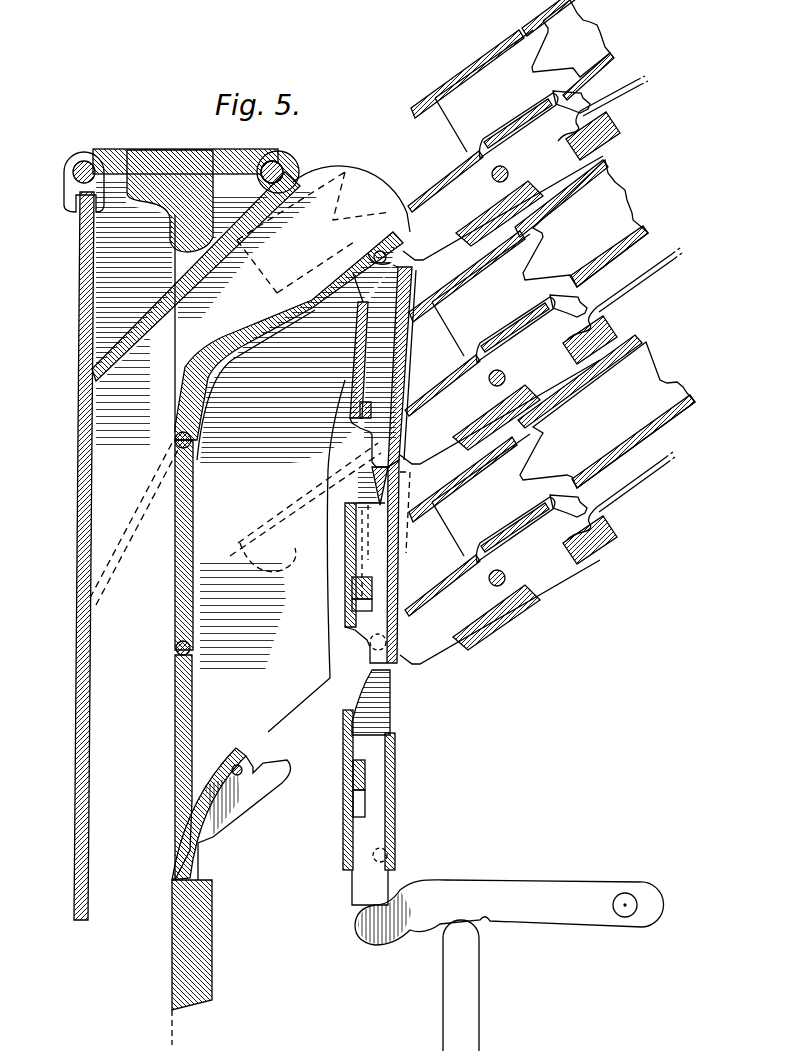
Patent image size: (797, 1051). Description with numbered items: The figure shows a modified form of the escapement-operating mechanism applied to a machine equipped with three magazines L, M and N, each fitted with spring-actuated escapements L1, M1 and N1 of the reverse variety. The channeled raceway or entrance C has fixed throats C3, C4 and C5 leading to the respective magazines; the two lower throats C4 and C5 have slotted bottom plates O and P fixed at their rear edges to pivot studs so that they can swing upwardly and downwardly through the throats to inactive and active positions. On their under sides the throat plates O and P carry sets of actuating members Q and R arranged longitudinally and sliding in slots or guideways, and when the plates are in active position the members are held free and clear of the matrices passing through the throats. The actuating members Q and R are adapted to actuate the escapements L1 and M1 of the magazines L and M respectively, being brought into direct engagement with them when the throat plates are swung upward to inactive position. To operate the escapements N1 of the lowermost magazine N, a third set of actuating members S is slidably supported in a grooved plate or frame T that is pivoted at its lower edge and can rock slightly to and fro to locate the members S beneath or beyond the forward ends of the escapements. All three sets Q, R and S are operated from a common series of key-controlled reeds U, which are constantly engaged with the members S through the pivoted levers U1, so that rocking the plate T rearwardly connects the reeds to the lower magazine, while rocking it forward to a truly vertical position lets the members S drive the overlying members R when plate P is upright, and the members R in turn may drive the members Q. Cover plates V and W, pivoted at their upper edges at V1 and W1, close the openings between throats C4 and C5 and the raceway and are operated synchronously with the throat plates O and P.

The channeled raceway or entrance C is at (71, 536).
The fixed throat C3 is at (294, 243).
The fixed throat C4 is at (244, 455).
The fixed throat C5 is at (231, 867).
The cover plate V is at (173, 552).
The pivot of cover plate V V1 is at (174, 440).
The cover plate W is at (175, 715).
The pivot of cover plate W W1 is at (175, 648).
The magazine L is at (568, 50).
The escapement L1 is at (480, 183).
The magazine M is at (581, 223).
The escapement M1 is at (527, 353).
The magazine N is at (606, 411).
The escapement N1 is at (505, 565).
The slide bar X is at (541, 347).
The slotted bottom plate O is at (409, 345).
The slotted bottom plate P is at (399, 545).
The actuating members Q is at (358, 340).
The actuating members R is at (360, 565).
The actuating members S is at (383, 708).
The grooved plate or frame T is at (410, 753).
The reeds or operating devices U is at (472, 980).
The pivoted lever U1 is at (508, 888).